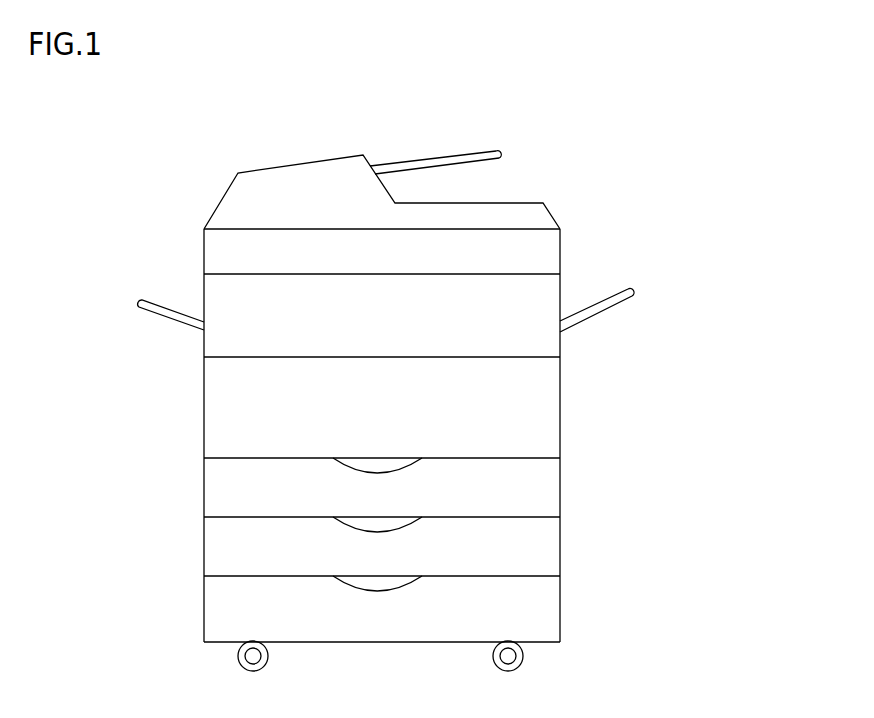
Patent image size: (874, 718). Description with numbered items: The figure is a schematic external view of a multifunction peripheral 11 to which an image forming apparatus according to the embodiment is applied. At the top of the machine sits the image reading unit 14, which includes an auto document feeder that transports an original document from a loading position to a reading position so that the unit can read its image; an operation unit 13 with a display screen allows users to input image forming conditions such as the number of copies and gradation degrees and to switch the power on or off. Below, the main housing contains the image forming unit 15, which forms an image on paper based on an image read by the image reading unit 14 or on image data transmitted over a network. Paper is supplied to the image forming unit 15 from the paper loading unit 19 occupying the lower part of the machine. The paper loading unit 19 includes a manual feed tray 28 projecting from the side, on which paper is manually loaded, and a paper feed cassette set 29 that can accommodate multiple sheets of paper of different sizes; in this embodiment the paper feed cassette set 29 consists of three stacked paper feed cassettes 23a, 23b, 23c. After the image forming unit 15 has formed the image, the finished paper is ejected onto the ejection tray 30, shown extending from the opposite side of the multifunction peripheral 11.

The multifunction peripheral 11 is at (621, 136).
The operation unit 13 is at (582, 248).
The image reading unit 14 is at (575, 198).
The image forming unit 15 is at (179, 396).
The paper loading unit 19 is at (744, 287).
The paper feed cassette 23a is at (580, 489).
The paper feed cassette 23b is at (580, 547).
The paper feed cassette 23c is at (580, 610).
The manual feed tray 28 is at (632, 323).
The paper feed cassette set 29 is at (702, 458).
The ejection tray 30 is at (143, 326).